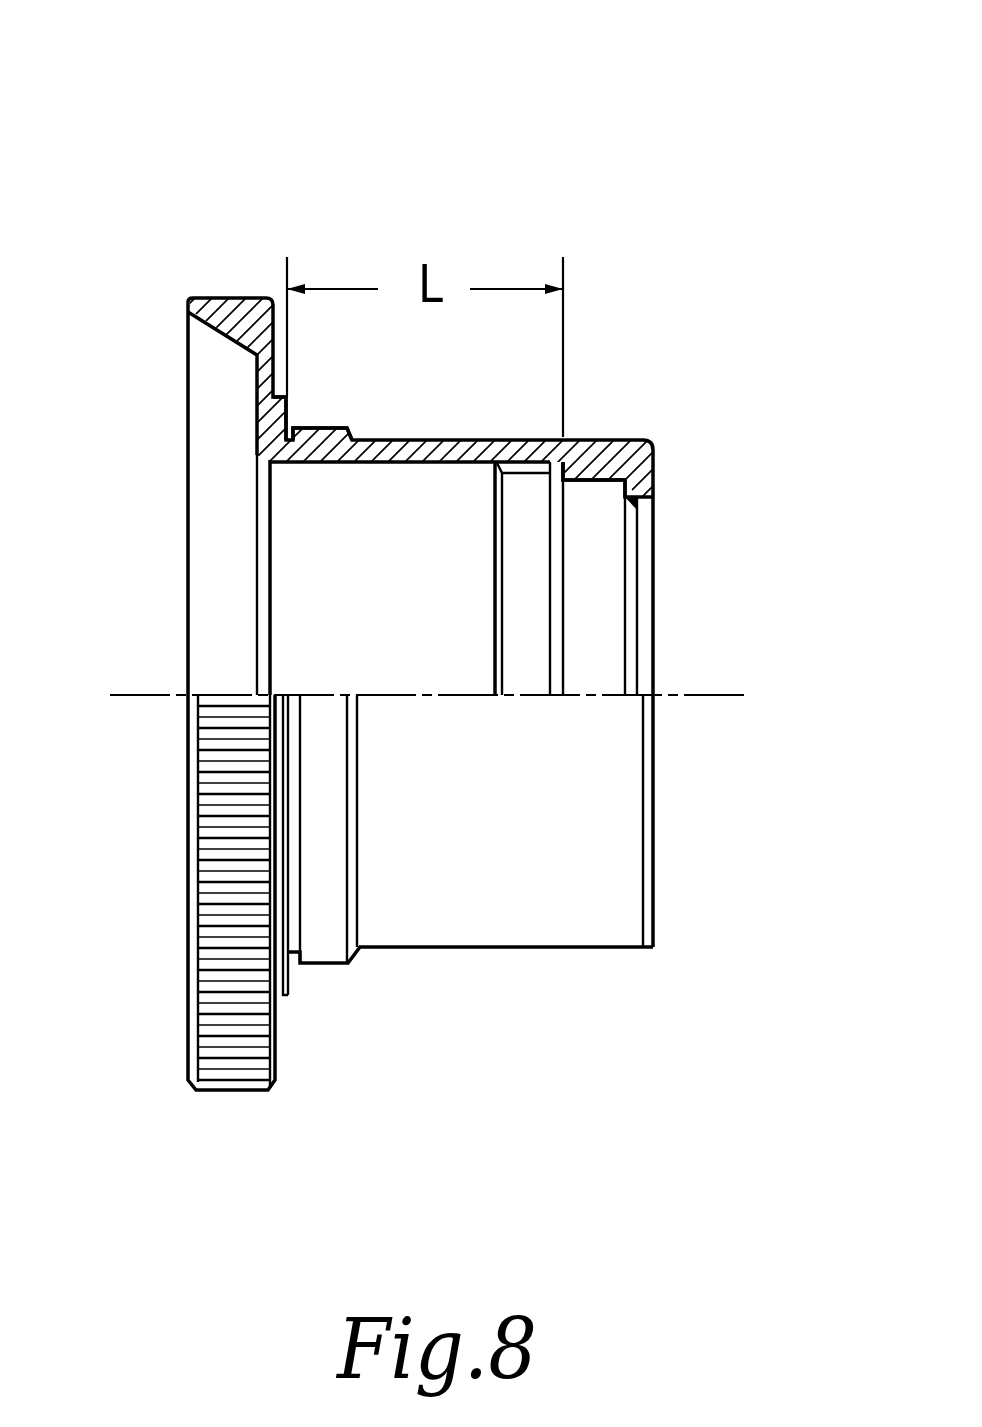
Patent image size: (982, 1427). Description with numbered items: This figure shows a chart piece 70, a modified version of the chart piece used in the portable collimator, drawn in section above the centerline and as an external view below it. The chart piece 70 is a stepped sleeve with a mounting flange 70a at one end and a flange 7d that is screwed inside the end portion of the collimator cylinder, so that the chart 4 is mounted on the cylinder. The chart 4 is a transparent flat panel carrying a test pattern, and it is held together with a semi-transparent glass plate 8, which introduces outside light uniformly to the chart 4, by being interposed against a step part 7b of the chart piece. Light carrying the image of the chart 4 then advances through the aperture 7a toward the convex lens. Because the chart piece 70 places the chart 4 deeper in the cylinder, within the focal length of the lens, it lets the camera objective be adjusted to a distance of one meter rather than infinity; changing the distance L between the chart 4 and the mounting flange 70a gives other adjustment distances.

The chart piece 70 is at (400, 67).
The mounting flange 70a is at (293, 415).
The flange 7d is at (340, 424).
The step part 7b is at (597, 458).
The aperture 7a is at (633, 506).
The chart 4 is at (558, 573).
The semi-transparent glass plate 8 is at (268, 543).